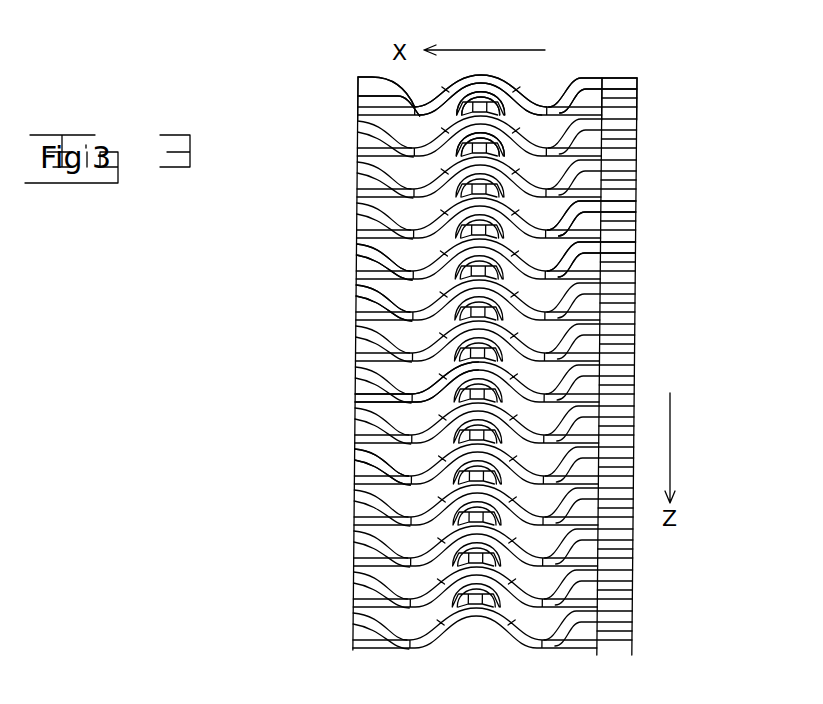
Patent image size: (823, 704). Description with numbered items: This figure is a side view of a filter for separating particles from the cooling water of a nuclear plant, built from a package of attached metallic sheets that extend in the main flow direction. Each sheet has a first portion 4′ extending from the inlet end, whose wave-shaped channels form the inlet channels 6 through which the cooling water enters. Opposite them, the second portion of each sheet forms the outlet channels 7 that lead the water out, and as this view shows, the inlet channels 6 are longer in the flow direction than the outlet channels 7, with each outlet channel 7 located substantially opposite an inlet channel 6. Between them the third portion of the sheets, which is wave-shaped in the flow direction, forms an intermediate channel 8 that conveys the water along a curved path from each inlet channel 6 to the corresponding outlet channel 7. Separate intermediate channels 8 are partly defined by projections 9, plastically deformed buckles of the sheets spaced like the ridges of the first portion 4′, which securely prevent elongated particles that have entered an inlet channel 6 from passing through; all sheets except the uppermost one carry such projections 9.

The first portion 4′ is at (623, 88).
The inlet channels 6 is at (617, 238).
The outlet channels 7 is at (358, 312).
The intermediate channel 8 is at (356, 447).
The projections 9 is at (500, 97).